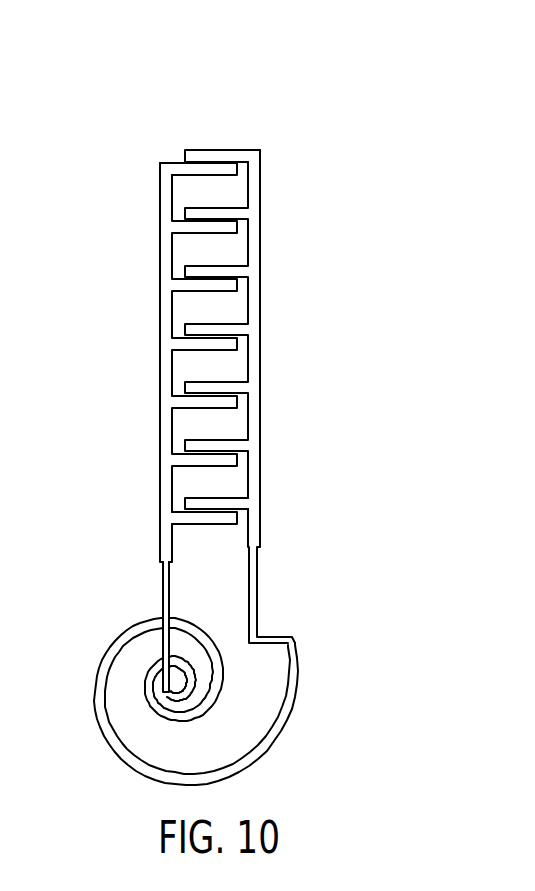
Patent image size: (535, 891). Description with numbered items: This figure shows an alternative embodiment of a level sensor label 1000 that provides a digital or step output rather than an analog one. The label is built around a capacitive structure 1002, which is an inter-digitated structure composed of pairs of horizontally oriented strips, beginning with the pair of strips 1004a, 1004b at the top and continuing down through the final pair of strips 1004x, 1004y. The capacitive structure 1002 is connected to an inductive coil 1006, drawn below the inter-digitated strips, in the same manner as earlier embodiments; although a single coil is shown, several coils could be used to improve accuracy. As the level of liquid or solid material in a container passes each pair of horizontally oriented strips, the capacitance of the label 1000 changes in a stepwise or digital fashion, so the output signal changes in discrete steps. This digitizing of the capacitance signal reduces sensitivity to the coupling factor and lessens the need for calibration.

The level sensor label 1000 is at (113, 100).
The capacitive structure 1002 is at (313, 228).
The horizontally oriented strip 1004a is at (168, 162).
The horizontally oriented strip 1004b is at (223, 149).
The horizontally oriented strip 1004x is at (186, 525).
The horizontally oriented strip 1004y is at (230, 498).
The inductive coil 1006 is at (301, 647).